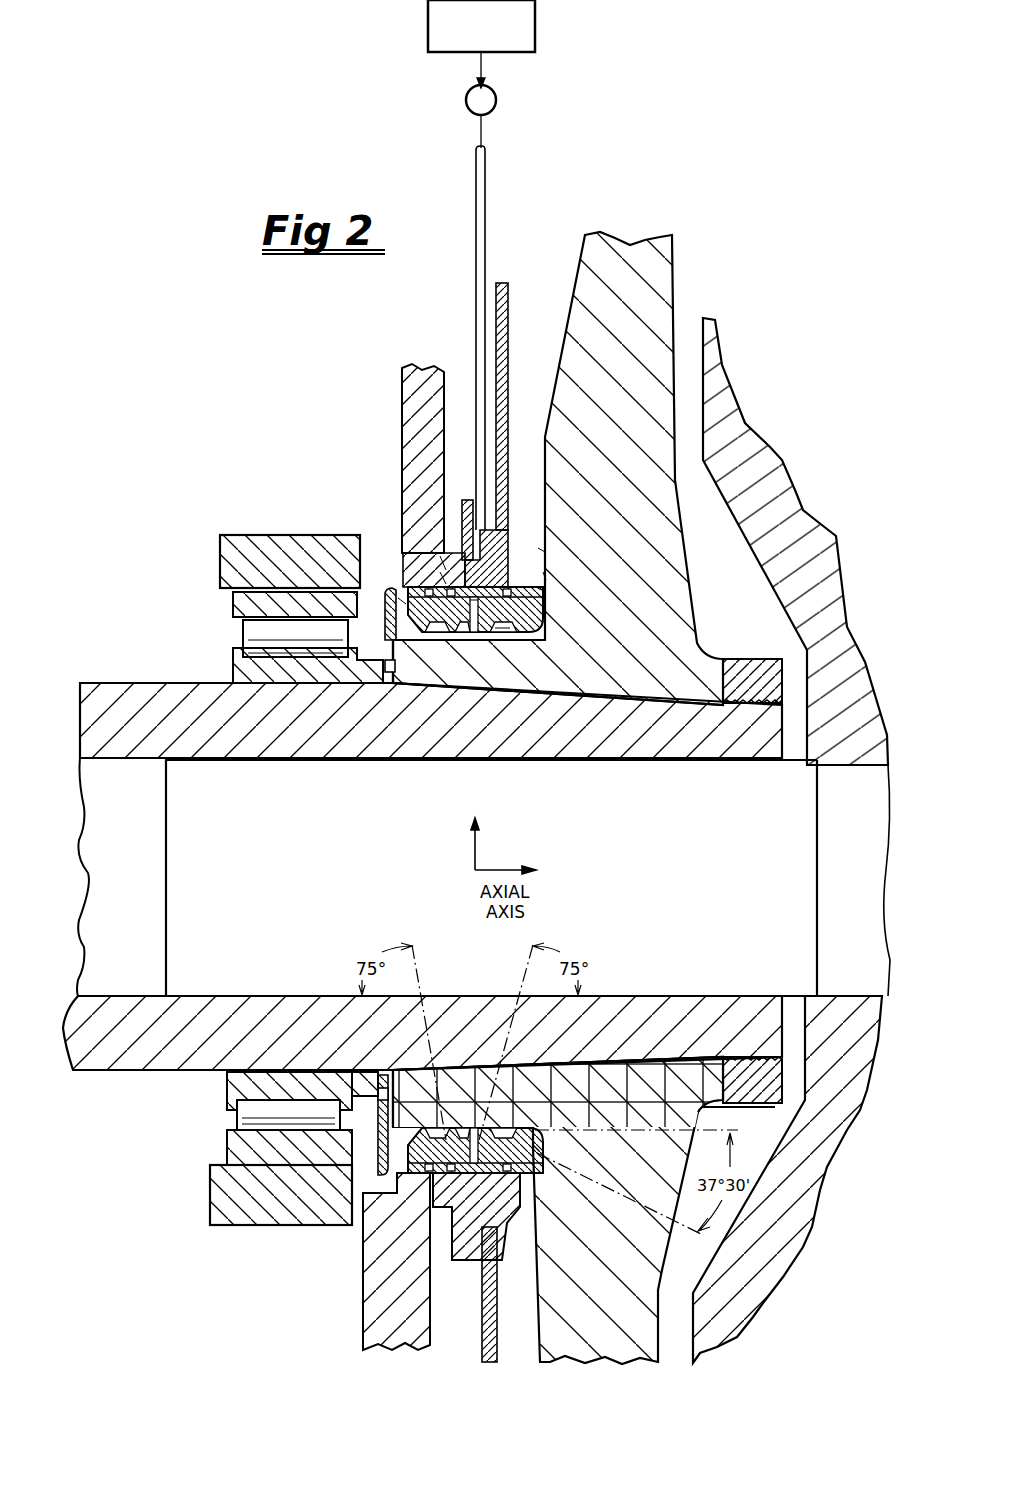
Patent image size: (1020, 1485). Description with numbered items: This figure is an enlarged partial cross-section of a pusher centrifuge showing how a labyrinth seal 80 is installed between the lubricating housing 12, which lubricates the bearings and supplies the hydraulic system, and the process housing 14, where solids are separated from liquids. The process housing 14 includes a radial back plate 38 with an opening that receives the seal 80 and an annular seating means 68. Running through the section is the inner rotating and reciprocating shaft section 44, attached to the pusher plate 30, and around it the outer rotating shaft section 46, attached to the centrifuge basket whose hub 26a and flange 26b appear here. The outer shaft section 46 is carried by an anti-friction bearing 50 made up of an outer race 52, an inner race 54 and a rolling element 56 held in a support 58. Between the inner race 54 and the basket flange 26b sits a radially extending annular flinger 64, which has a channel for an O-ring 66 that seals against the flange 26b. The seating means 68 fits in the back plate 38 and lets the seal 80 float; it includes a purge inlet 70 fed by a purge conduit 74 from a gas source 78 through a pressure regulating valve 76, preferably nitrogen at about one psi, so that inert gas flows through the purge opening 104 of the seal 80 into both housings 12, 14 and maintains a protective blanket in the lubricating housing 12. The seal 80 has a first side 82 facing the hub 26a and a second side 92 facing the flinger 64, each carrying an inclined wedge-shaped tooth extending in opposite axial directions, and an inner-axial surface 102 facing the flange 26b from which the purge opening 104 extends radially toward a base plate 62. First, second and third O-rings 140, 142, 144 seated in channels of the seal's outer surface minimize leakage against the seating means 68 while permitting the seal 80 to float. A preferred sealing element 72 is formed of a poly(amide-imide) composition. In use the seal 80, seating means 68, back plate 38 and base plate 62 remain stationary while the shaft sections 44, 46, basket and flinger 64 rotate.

The lubricating housing 12 is at (310, 425).
The process housing 14 is at (805, 398).
The hub 26a is at (674, 268).
The flange 26b is at (418, 692).
The pusher plate 30 is at (820, 545).
The radial back plate 38 is at (509, 297).
The inner rotating and reciprocating shaft section 44 is at (95, 804).
The outer rotating shaft section 46 is at (85, 712).
The bearing 50 is at (165, 572).
The outer race 52 is at (233, 600).
The inner race 54 is at (233, 670).
The rolling element 56 is at (243, 640).
The support 58 is at (240, 536).
The base plate 62 is at (400, 386).
The flinger 64 is at (386, 592).
The O-ring 66 is at (388, 674).
The seating means 68 is at (545, 548).
The purge inlet 70 is at (469, 492).
The sealing element 72 is at (497, 522).
The purge conduit 74 is at (486, 190).
The pressure regulating valve 76 is at (497, 96).
The gas source 78 is at (537, 38).
The labyrinth seal 80 is at (540, 614).
The first side 82 is at (538, 588).
The second side 92 is at (396, 598).
The inner-axial surface 102 is at (500, 632).
The purge opening 104 is at (472, 600).
The first O-ring 140 is at (545, 578).
The second O-ring 142 is at (440, 560).
The third O-ring 144 is at (440, 578).